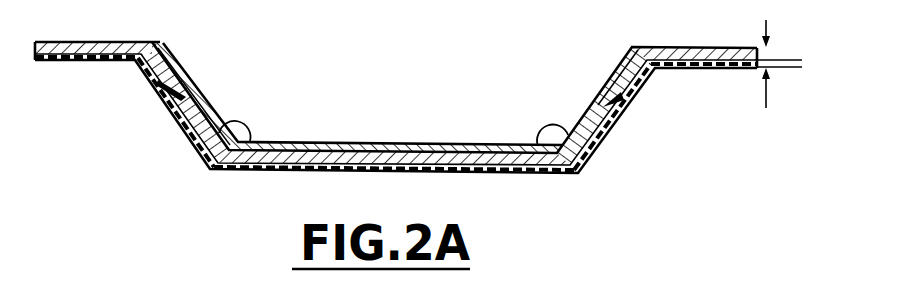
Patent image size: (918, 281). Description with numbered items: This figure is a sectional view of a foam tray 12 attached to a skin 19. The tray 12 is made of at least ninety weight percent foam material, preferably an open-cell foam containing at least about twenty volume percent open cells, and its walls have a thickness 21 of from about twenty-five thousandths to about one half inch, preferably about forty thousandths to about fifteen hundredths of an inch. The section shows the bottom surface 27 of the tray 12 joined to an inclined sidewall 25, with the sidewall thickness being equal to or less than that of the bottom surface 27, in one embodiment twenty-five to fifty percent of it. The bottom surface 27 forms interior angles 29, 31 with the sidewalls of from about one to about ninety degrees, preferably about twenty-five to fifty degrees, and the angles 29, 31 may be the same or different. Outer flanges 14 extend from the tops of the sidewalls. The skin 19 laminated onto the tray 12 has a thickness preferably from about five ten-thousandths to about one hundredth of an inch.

The tray 12 is at (538, 174).
The flange 14 is at (70, 62).
The skin layer 19 is at (293, 134).
The thickness 21 is at (802, 67).
The sidewall 25 is at (178, 119).
The bottom surface 27 is at (232, 172).
The interior angle 29 is at (548, 132).
The interior angle 31 is at (250, 137).